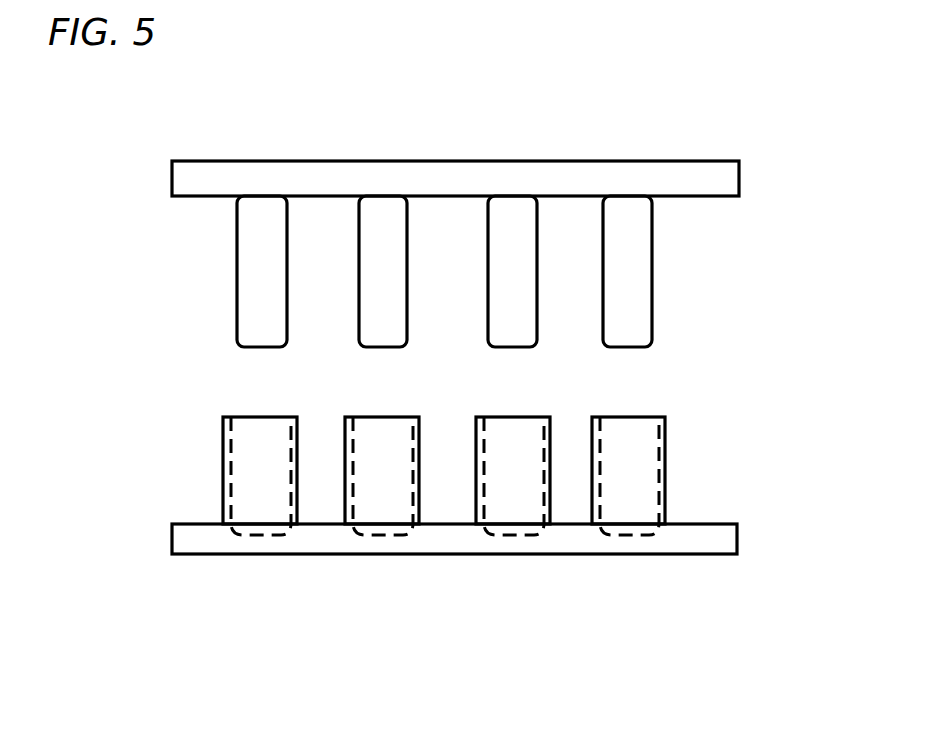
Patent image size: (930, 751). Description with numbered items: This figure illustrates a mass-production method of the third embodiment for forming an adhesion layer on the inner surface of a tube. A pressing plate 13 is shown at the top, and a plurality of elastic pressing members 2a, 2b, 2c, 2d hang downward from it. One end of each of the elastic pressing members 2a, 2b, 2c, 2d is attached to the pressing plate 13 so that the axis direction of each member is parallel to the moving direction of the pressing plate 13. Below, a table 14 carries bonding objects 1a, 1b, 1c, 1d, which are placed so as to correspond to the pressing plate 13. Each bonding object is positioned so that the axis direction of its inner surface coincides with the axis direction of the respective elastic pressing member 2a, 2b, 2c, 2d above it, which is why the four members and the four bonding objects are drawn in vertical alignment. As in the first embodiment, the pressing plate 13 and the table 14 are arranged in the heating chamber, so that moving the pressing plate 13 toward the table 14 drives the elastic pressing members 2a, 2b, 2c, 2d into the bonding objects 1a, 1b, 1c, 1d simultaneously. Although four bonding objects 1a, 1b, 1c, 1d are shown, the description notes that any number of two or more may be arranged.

The pressing plate 13 is at (585, 166).
The table 14 is at (690, 533).
The elastic pressing member 2a is at (287, 257).
The elastic pressing member 2b is at (401, 252).
The elastic pressing member 2c is at (525, 243).
The elastic pressing member 2d is at (643, 245).
The bonding object 1a is at (280, 517).
The bonding object 1b is at (395, 517).
The bonding object 1c is at (525, 517).
The bonding object 1d is at (645, 513).